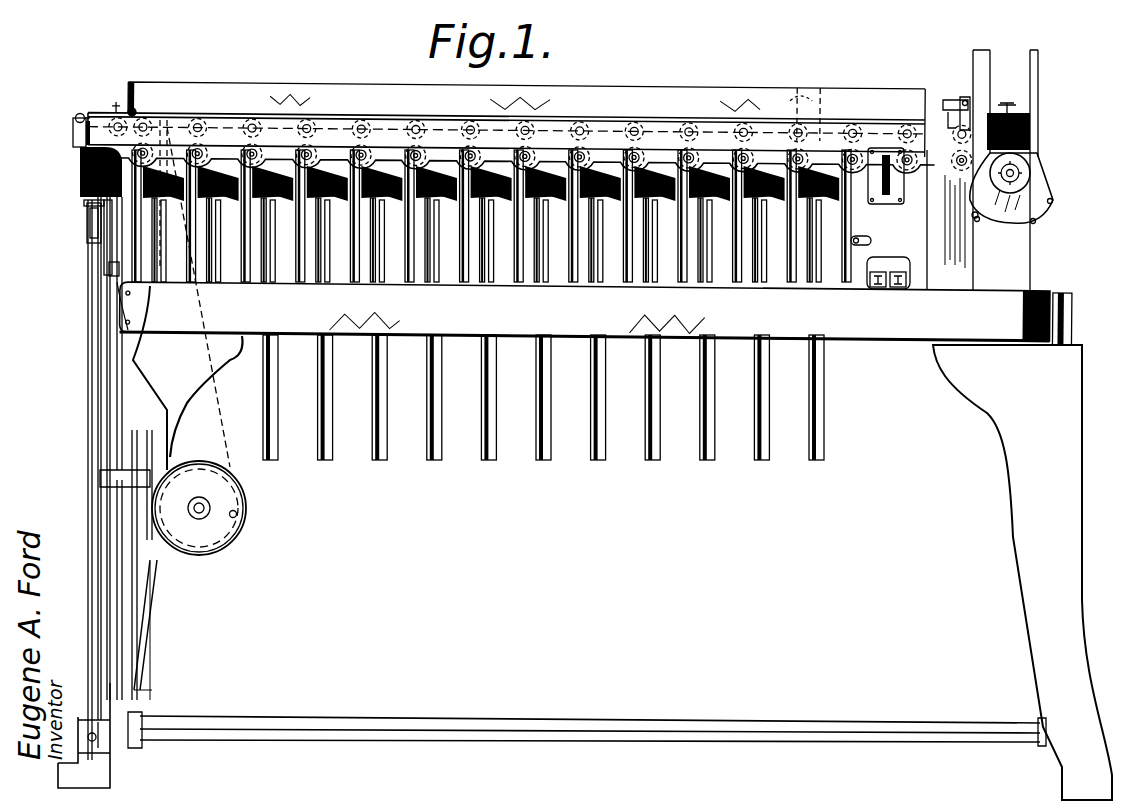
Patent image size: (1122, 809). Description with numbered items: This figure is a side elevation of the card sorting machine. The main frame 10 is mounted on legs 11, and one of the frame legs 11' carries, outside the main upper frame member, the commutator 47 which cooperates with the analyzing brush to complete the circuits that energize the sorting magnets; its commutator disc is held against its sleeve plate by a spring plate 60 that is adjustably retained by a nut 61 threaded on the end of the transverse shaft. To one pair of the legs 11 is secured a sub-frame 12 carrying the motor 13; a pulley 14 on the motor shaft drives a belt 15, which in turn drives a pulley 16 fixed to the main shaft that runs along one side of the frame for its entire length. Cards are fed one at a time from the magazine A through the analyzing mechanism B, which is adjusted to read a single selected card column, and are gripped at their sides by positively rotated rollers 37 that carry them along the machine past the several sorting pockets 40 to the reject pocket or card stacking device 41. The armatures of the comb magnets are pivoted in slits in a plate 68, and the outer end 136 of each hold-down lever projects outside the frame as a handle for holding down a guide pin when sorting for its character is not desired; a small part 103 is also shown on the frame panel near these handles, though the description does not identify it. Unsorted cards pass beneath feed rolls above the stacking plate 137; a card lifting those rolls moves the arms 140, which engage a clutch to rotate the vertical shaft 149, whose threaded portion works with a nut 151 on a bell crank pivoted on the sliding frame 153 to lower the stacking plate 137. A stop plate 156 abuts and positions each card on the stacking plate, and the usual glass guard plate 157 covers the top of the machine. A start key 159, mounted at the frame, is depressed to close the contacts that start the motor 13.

The main frame 10 is at (866, 326).
The legs 11 is at (626, 572).
The frame leg 11' is at (1019, 170).
The sub-frame 12 is at (160, 562).
The motor 13 is at (215, 520).
The pulley 14 is at (238, 512).
The belt 15 is at (228, 462).
The pulley 16 is at (181, 98).
The rollers 37 is at (808, 103).
The sorting pockets 40 is at (447, 173).
The reject pocket 41 is at (104, 122).
The commutator 47 is at (1046, 215).
The spring plate 60 is at (1020, 168).
The nut 61 is at (1024, 175).
The plate 68 is at (1042, 205).
The stud 103 is at (874, 241).
The lever end 136 is at (894, 182).
The stacking plate 137 is at (85, 199).
The arms 140 is at (101, 133).
The vertical shaft 149 is at (97, 310).
The nut 151 is at (97, 238).
The frame 153 is at (105, 267).
The stop plate 156 is at (73, 134).
The glass guard plate 157 is at (606, 118).
The start key 159 is at (897, 282).
The magazine A is at (1007, 88).
The analyzing mechanism B is at (966, 97).